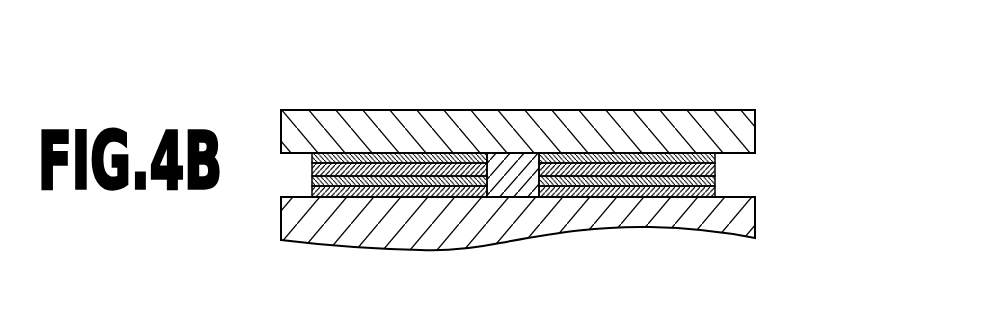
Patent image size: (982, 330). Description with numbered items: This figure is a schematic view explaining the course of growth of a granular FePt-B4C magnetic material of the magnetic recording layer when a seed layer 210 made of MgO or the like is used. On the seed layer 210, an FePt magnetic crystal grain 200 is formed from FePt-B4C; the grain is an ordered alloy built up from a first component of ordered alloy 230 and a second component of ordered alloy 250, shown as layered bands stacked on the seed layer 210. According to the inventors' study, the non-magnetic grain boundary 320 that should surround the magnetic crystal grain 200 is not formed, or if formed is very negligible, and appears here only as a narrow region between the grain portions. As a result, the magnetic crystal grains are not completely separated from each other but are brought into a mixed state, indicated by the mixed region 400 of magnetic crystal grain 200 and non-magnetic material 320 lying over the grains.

The magnetic crystal grain 200 is at (571, 125).
The seed layer 210 is at (757, 212).
The first component of ordered alloy 230 is at (716, 182).
The second component of ordered alloy 250 is at (716, 161).
The non-magnetic grain boundary 320 is at (509, 198).
The mixed region of magnetic crystal grain and non-magnetic material 400 is at (614, 125).